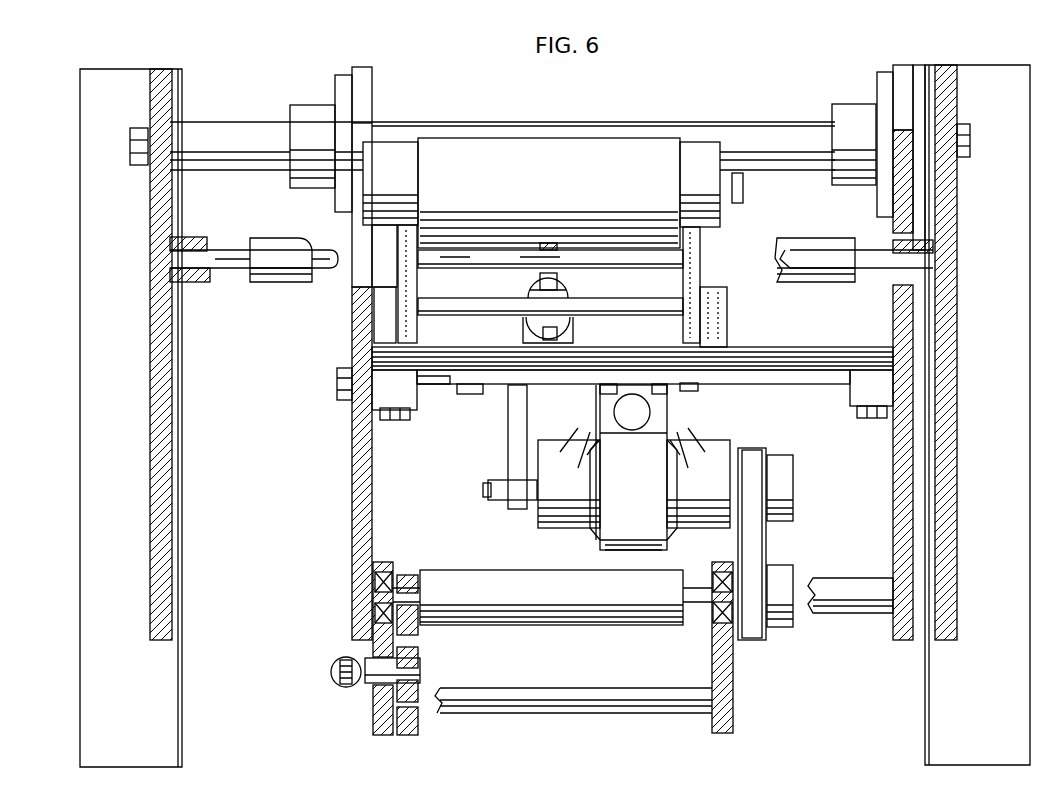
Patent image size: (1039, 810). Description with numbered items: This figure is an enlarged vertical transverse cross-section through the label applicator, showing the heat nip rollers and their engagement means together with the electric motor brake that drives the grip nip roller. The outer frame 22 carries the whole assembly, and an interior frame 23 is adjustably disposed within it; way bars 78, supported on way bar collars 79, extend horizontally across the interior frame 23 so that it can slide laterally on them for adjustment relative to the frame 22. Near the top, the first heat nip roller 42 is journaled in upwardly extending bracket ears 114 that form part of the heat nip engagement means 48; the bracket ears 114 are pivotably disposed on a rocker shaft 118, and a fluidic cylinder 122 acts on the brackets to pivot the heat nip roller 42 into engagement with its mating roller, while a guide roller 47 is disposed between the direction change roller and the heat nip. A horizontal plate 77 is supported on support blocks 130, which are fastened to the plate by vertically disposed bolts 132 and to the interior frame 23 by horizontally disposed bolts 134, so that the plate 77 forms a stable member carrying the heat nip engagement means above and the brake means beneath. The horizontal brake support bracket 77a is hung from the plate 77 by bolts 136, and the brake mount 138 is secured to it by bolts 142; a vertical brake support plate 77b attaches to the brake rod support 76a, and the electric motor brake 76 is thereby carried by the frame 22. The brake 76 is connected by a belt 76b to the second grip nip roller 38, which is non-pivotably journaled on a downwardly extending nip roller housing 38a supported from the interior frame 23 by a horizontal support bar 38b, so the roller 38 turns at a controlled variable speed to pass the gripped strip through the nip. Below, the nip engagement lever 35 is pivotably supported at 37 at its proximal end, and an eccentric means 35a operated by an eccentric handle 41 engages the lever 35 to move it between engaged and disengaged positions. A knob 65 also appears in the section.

The frame 22 is at (165, 482).
The interior frame 23 is at (360, 505).
The nip engagement lever 35 is at (418, 728).
The eccentric means 35a is at (420, 660).
The pivotable support 37 is at (580, 705).
The second grip nip roller 38 is at (558, 604).
The nip roller housing 38a is at (735, 668).
The horizontal support bar 38b is at (860, 605).
The eccentric handle 41 is at (335, 685).
The first heat nip roller 42 is at (556, 178).
The guide roller 47 is at (478, 245).
The heat nip engagement means 48 is at (733, 305).
The handle knob 65 is at (258, 285).
The electric motor brake 76 is at (705, 465).
The brake rod support 76a is at (490, 500).
The belt 76b is at (757, 545).
The horizontal plate 77 is at (810, 360).
The horizontal brake support bracket 77a is at (448, 385).
The vertical brake support plate 77b is at (508, 455).
The way bar 78 is at (222, 135).
The way bar collar 79 is at (298, 108).
The bracket ear 114 is at (705, 270).
The rocker shaft 118 is at (605, 303).
The fluidic cylinder 122 is at (525, 282).
The support block 130 is at (850, 405).
The vertically disposed bolt 132 is at (398, 420).
The horizontally disposed bolt 134 is at (340, 385).
The bolt 136 is at (710, 390).
The brake mount 138 is at (598, 415).
The bolt 142 is at (665, 398).